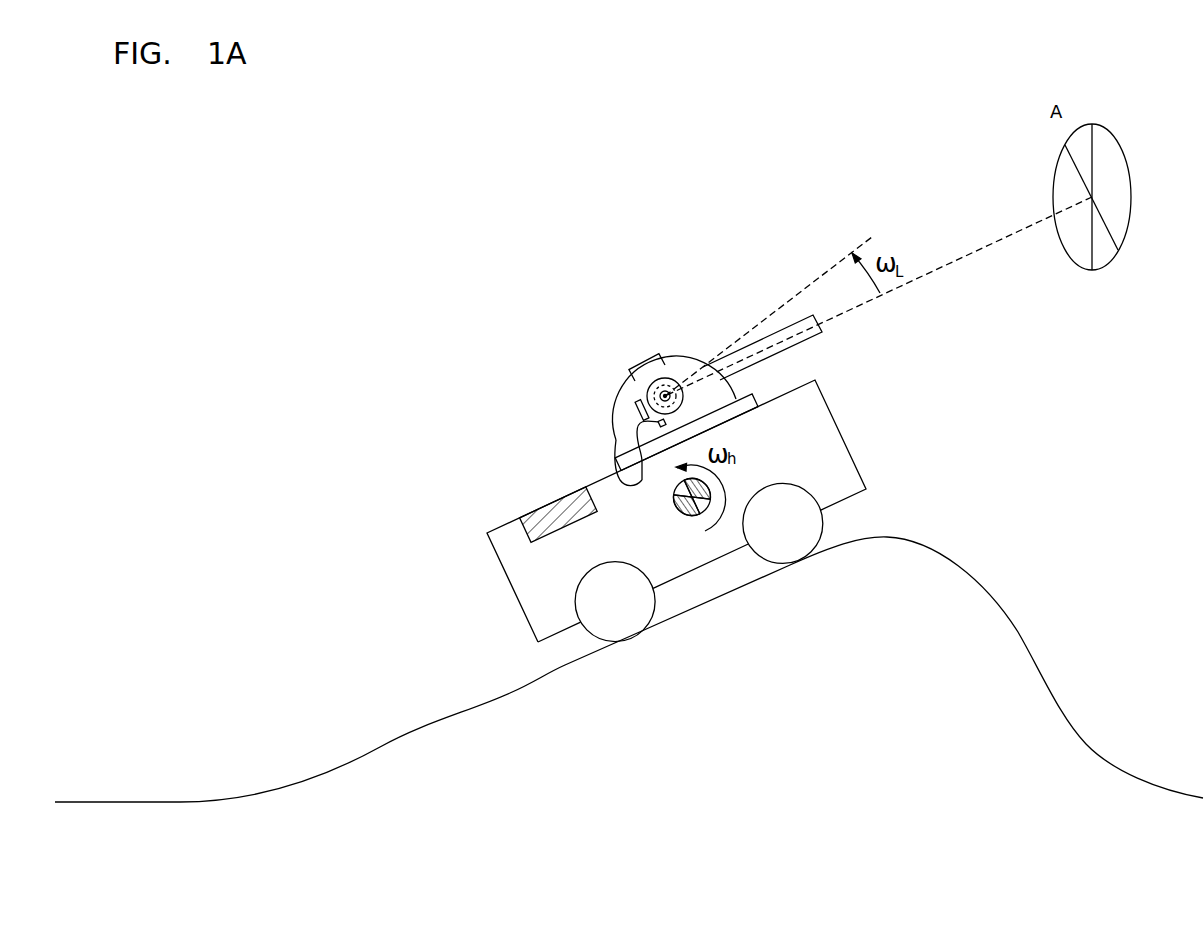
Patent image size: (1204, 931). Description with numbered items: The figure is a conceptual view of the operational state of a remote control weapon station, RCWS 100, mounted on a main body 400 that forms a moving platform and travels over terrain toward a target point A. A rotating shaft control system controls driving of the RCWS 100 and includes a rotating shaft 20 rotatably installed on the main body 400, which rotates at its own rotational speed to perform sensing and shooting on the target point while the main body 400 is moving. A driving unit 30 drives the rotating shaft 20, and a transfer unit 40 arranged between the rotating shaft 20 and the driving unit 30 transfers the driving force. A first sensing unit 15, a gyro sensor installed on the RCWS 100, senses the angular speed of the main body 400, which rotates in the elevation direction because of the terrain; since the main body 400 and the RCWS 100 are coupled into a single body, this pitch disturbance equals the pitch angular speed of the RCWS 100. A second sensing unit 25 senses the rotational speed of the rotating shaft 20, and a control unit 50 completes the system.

The RCWS 100 is at (613, 408).
The first sensing unit 15 is at (617, 444).
The rotating shaft 20 is at (667, 394).
The second sensing unit 25 is at (637, 401).
The driving unit 30 is at (651, 364).
The transfer unit 40 is at (684, 402).
The control unit 50 is at (520, 538).
The main body 400 is at (854, 434).